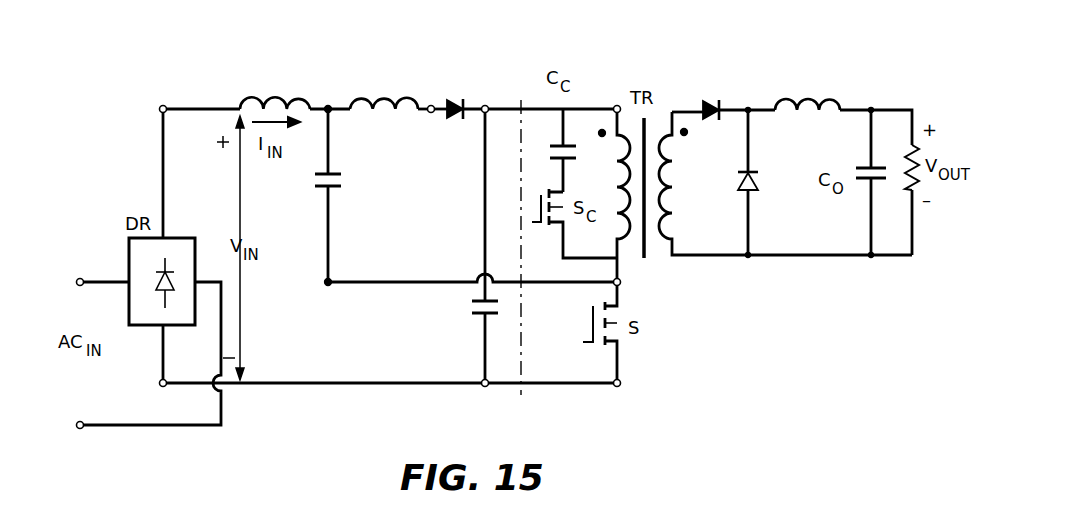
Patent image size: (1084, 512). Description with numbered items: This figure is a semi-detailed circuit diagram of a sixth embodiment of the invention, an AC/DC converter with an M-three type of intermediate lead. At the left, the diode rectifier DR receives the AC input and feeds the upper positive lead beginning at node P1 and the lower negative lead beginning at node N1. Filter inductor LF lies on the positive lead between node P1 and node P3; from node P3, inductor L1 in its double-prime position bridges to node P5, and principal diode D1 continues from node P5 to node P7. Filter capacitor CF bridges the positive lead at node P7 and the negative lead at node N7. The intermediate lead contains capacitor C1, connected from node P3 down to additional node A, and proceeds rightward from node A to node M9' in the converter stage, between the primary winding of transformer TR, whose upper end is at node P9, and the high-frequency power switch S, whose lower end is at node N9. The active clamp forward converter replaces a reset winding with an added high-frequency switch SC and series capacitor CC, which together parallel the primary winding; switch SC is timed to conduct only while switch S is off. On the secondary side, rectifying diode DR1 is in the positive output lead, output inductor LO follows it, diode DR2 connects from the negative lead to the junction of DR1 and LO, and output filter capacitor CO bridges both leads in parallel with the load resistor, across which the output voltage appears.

The positive rectifier output node P1 is at (160, 107).
The positive lead node P3 is at (329, 106).
The positive lead node P5 is at (431, 104).
The positive lead node P7 is at (486, 105).
The positive converter input node P9 is at (616, 104).
The negative rectifier output node N1 is at (160, 386).
The negative lead node N7 is at (486, 388).
The negative converter input node N9 is at (618, 386).
The intermediate lead node M9' is at (683, 296).
The intermediate lead node A is at (326, 286).
The capacitor C1 is at (341, 180).
The filter capacitor CF is at (478, 314).
The series capacitor CC is at (563, 144).
The filter inductor LF is at (275, 87).
The inductor L1 is at (384, 88).
The output inductor LO is at (807, 88).
The principal diode D1 is at (458, 93).
The rectifying diode DR1 is at (712, 97).
The diode DR2 is at (755, 182).